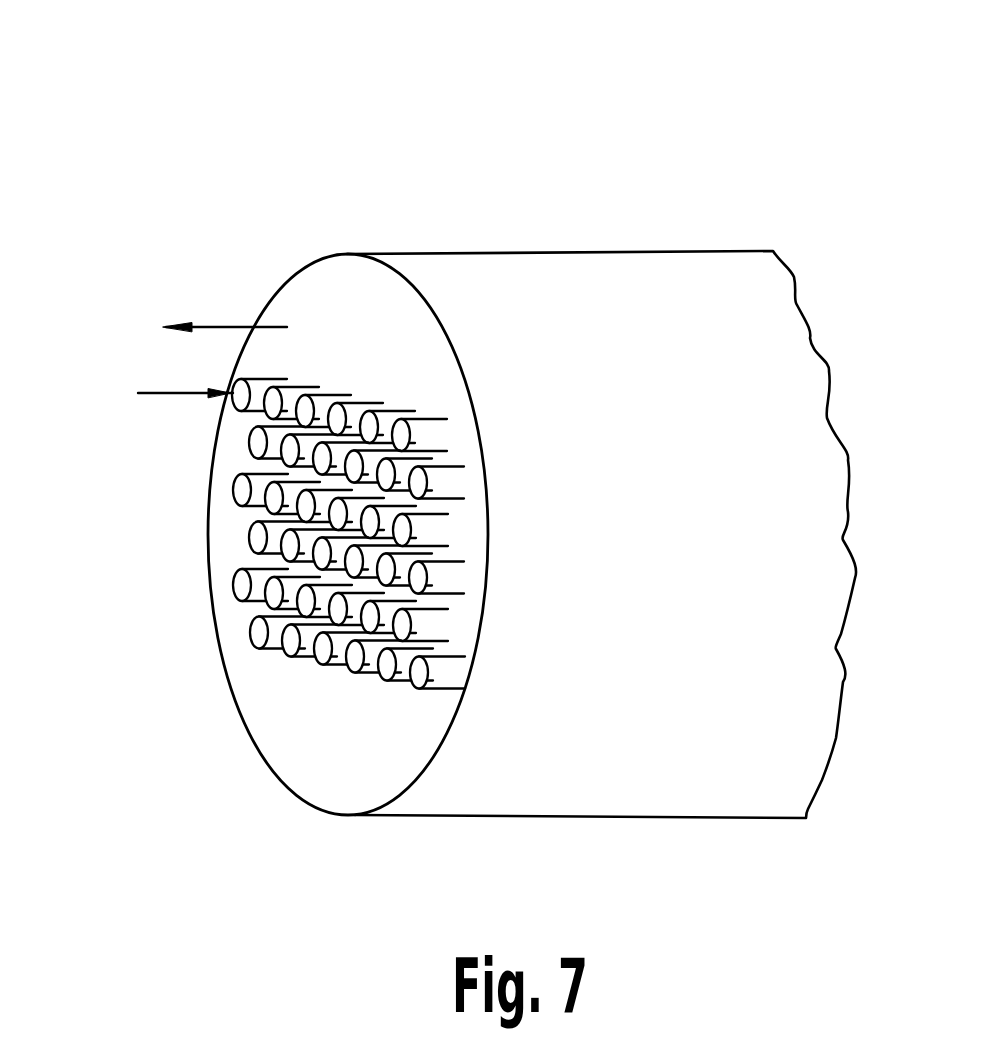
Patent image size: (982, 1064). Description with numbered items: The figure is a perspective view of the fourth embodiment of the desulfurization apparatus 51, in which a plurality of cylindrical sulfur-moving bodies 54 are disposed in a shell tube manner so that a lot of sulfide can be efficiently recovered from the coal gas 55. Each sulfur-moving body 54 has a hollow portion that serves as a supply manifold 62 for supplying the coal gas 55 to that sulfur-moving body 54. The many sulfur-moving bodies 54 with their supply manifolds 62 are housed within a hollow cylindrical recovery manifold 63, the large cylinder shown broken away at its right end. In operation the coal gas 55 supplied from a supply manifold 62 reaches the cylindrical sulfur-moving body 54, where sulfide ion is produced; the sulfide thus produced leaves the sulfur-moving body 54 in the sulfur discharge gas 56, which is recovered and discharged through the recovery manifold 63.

The desulfurization apparatus 51 is at (245, 152).
The sulfur-moving body 54 is at (262, 651).
The coal gas 55 is at (170, 394).
The sulfur discharge gas 56 is at (213, 326).
The supply manifold 62 is at (245, 583).
The recovery manifold 63 is at (323, 293).